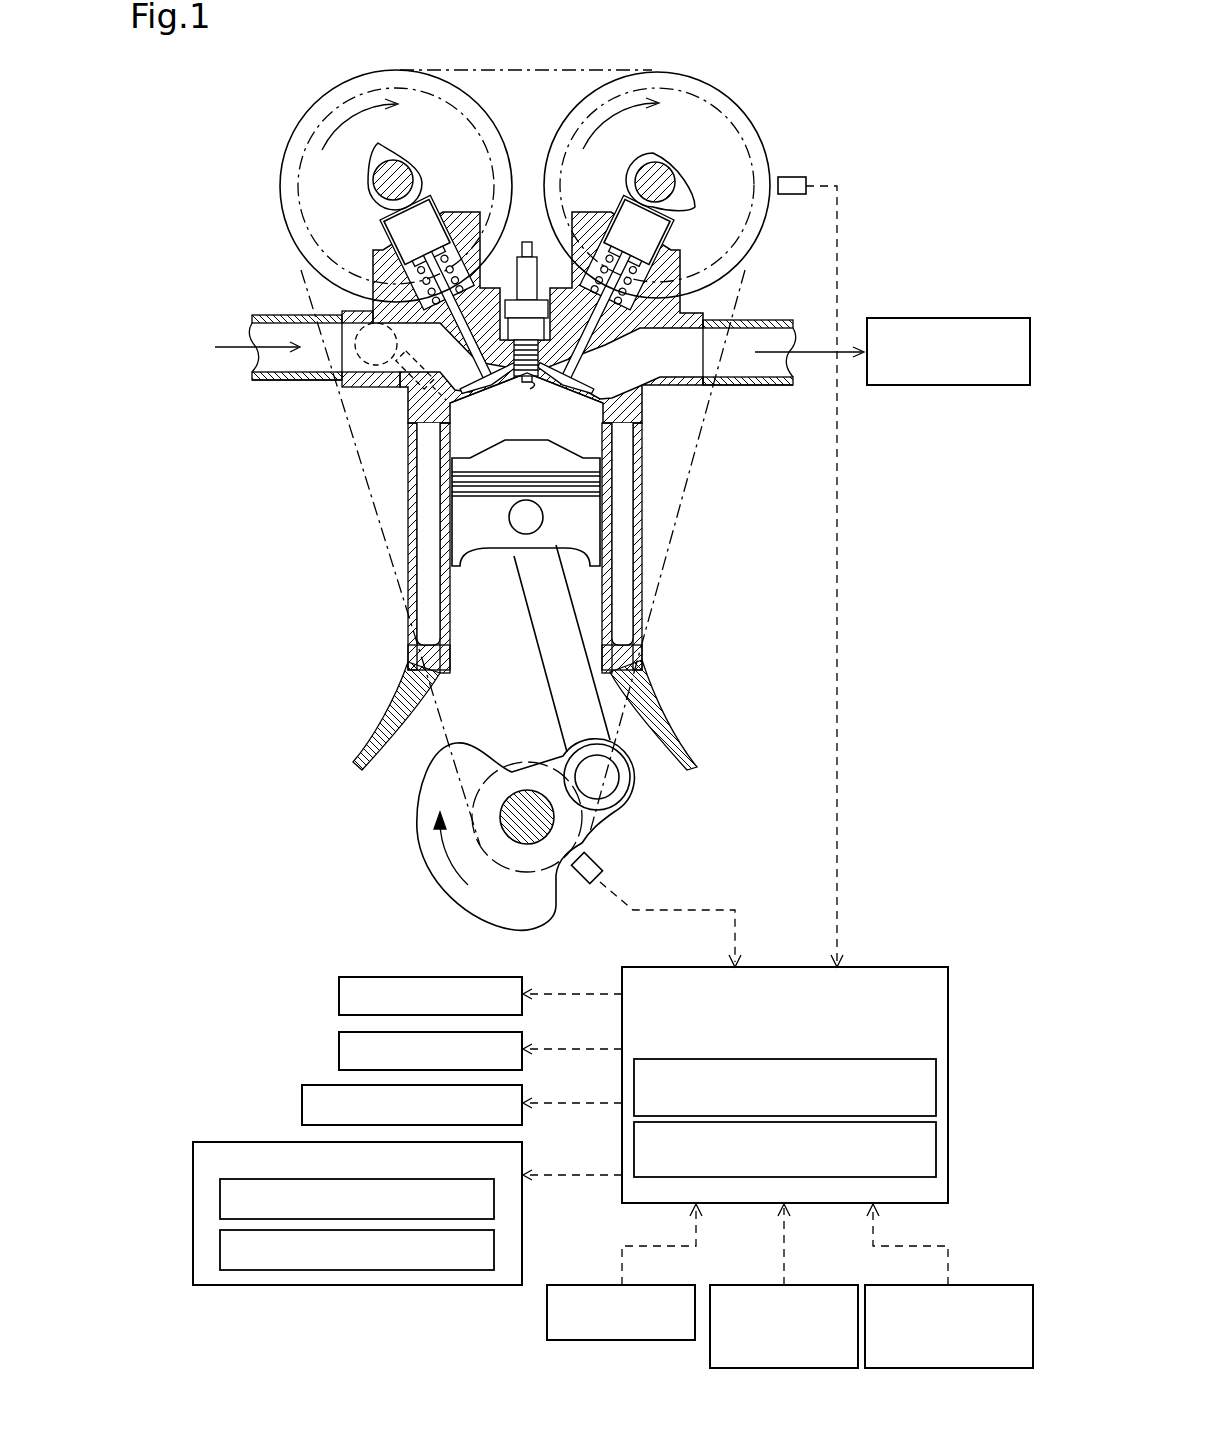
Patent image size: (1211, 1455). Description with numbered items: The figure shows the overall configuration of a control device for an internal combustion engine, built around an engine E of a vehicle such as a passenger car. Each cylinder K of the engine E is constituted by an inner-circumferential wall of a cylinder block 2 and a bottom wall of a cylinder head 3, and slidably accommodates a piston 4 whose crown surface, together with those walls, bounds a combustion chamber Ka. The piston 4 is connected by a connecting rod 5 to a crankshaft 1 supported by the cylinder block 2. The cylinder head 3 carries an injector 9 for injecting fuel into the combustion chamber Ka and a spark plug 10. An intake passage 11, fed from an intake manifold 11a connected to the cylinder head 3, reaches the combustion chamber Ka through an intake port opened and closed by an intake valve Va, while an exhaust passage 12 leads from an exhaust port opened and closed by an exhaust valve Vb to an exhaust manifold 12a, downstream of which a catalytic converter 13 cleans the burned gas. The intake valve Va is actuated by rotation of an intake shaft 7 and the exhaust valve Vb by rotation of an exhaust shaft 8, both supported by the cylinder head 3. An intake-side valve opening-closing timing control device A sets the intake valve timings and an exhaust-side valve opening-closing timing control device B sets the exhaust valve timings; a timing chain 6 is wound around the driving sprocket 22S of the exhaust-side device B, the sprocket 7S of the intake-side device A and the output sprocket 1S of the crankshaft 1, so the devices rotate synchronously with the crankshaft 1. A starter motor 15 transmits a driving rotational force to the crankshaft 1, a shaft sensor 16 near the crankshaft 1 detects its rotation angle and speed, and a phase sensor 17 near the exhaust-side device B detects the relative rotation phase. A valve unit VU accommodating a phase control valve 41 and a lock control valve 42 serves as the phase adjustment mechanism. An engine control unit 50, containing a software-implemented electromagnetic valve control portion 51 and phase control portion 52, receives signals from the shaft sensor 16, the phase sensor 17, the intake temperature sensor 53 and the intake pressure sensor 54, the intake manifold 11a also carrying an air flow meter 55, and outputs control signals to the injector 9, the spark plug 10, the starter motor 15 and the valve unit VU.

The crankshaft 1 is at (527, 790).
The output sprocket 1S is at (502, 870).
The cylinder block 2 is at (640, 556).
The cylinder head 3 is at (650, 398).
The piston 4 is at (590, 506).
The connecting rod 5 is at (537, 612).
The timing chain 6 is at (395, 590).
The intake shaft 7 is at (372, 180).
The sprocket 7S is at (323, 113).
The exhaust shaft 8 is at (675, 172).
The driving sprocket 22S is at (700, 78).
The injector 9 is at (392, 405).
The spark plug 10 is at (527, 240).
The intake passage 11 is at (298, 338).
The intake manifold 11a is at (288, 381).
The exhaust passage 12 is at (750, 338).
The exhaust manifold 12a is at (755, 386).
The catalytic converter 13 is at (958, 318).
The starter motor 15 is at (302, 1104).
The shaft sensor 16 is at (602, 856).
The phase sensor 17 is at (800, 177).
The intake-side valve opening-closing timing control device A is at (298, 148).
The exhaust-side valve opening-closing timing control device B is at (732, 112).
The engine E is at (300, 452).
The cylinder K is at (447, 450).
The combustion chamber Ka is at (562, 426).
The intake valve Va is at (497, 392).
The exhaust valve Vb is at (585, 372).
The valve unit VU is at (193, 1160).
The phase control valve 41 is at (220, 1199).
The lock control valve 42 is at (220, 1249).
The engine control unit 50 is at (950, 1019).
The electromagnetic valve control portion 51 is at (938, 1090).
The phase control portion 52 is at (938, 1150).
The intake temperature sensor 53 is at (965, 1285).
The intake pressure sensor 54 is at (800, 1285).
The air flow meter 55 is at (600, 1285).